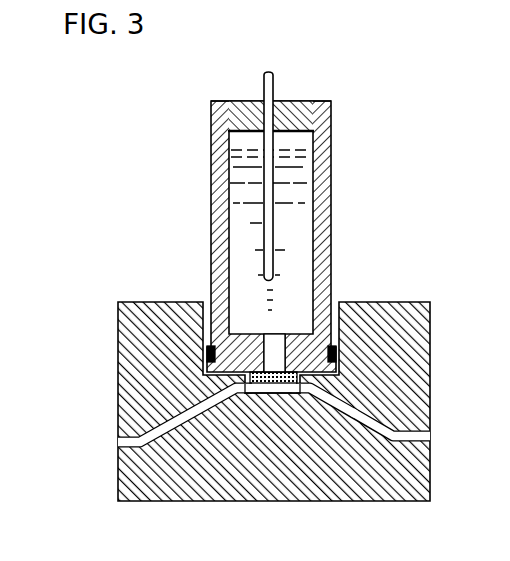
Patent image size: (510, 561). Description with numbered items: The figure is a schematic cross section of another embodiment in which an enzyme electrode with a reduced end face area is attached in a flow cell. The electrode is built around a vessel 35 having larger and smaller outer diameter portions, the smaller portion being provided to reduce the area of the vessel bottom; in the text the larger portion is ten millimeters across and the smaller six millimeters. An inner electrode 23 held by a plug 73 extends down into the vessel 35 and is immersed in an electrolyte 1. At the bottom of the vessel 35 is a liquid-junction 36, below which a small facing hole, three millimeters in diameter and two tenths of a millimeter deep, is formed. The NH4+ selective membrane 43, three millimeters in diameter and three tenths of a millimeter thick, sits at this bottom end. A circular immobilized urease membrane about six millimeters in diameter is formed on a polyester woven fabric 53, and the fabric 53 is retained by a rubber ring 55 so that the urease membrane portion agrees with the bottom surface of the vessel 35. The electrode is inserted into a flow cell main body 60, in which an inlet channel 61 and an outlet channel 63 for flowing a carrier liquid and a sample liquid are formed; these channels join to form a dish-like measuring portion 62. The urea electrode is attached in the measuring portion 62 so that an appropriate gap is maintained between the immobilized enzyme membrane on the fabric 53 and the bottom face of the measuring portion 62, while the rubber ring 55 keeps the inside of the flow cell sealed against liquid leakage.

The electrolyte 1 is at (275, 223).
The inner electrode 23 is at (273, 189).
The vessel 35 is at (218, 182).
The liquid-junction 36 is at (267, 340).
The NH4+ selective membrane 43 is at (286, 385).
The polyester woven fabric 53 is at (307, 389).
The rubber ring 55 is at (338, 357).
The flow cell main body 60 is at (130, 337).
The inlet channel 61 is at (152, 446).
The measuring portion 62 is at (257, 394).
The outlet channel 63 is at (393, 428).
The plug 73 is at (283, 100).